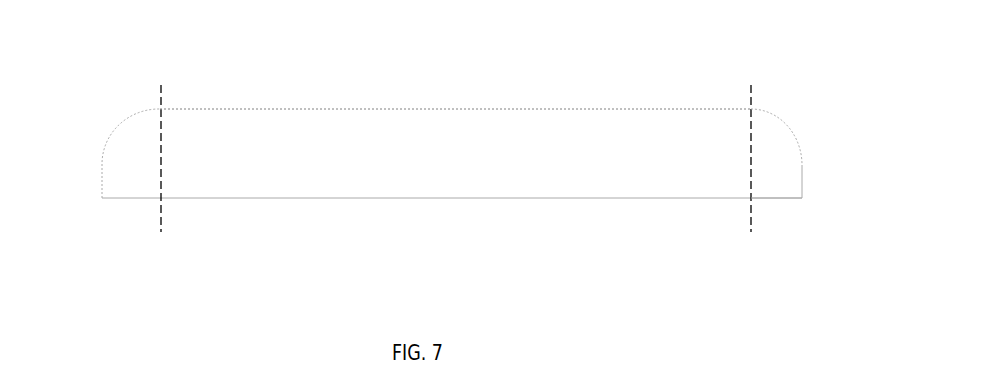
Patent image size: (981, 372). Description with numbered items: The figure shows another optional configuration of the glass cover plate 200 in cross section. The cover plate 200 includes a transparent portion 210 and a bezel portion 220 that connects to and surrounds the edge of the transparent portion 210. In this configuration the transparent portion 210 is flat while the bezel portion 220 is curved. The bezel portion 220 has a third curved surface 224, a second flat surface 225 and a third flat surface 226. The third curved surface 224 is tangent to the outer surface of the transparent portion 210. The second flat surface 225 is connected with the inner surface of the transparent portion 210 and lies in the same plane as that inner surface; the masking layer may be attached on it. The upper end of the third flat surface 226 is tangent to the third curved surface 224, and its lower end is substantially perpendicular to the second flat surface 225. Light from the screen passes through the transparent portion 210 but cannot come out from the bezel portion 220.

The cover plate 200 is at (504, 219).
The transparent portion 210 is at (418, 116).
The bezel portion 220 is at (134, 139).
The third curved surface 224 is at (788, 128).
The second flat surface 225 is at (773, 199).
The third flat surface 226 is at (802, 176).